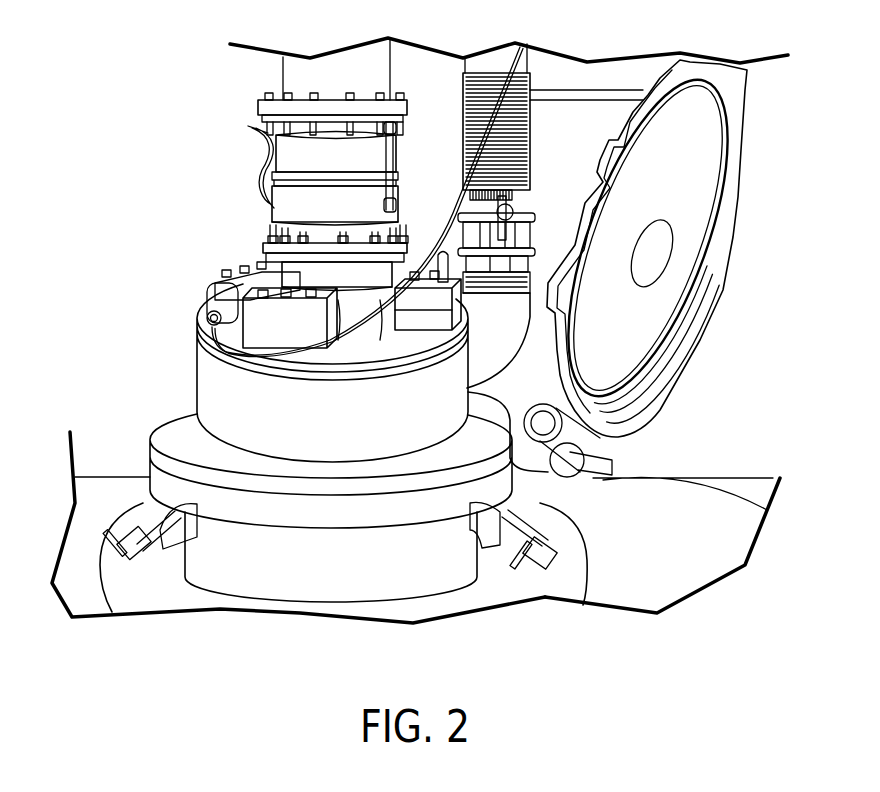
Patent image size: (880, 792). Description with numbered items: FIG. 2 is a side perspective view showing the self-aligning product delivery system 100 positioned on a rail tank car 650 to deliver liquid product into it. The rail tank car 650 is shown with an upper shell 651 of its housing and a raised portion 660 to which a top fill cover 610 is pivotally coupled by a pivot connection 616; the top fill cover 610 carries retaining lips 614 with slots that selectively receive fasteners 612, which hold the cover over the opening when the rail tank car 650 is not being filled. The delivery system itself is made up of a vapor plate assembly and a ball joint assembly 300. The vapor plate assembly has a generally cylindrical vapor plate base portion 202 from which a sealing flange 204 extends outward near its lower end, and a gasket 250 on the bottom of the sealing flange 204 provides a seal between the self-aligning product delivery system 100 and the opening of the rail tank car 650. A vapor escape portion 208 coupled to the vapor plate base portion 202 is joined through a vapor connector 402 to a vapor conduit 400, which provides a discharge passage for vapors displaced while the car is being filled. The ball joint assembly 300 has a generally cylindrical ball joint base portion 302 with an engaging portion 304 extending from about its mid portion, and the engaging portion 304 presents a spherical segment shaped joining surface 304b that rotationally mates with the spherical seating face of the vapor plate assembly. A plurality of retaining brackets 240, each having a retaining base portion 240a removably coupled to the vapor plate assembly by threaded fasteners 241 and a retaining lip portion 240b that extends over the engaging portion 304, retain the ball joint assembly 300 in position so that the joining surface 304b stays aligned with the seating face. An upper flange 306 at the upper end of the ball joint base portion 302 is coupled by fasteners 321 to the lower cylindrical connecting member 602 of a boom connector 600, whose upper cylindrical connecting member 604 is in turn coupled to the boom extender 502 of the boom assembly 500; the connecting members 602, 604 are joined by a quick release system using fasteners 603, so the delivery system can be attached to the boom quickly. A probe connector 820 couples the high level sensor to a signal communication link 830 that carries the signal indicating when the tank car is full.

The self-aligning product delivery system 100 is at (307, 433).
The vapor plate base portion 202 is at (215, 403).
The sealing flange 204 is at (170, 427).
The vapor escape portion 208 is at (512, 328).
The retaining brackets 240 is at (370, 294).
The retaining base portion 240a is at (440, 317).
The retaining lip portion 240b is at (433, 345).
The threaded fasteners 241 is at (445, 278).
The gasket 250 is at (405, 515).
The ball joint assembly 300 is at (341, 293).
The ball joint base portion 302 is at (320, 277).
The engaging portion 304 is at (383, 322).
The spherical segment shaped joining surface 304b is at (337, 337).
The upper flange 306 is at (390, 256).
The fasteners 321 is at (400, 243).
The vapor conduit 400 is at (530, 147).
The vapor connector 402 is at (538, 230).
The boom assembly 500 is at (509, 122).
The boom extender 502 is at (290, 78).
The boom connector 600 is at (344, 151).
The lower cylindrical connecting member 602 is at (362, 232).
The fasteners 603 is at (267, 183).
The upper cylindrical connecting member 604 is at (325, 163).
The top fill cover 610 is at (653, 307).
The fasteners 612 is at (118, 553).
The retaining lips 614 is at (737, 95).
The pivot connection 616 is at (567, 465).
The rail tank car 650 is at (665, 500).
The upper shell 651 is at (677, 572).
The raised portion 660 is at (248, 583).
The probe connector 820 is at (217, 293).
The signal communication link 830 is at (497, 72).